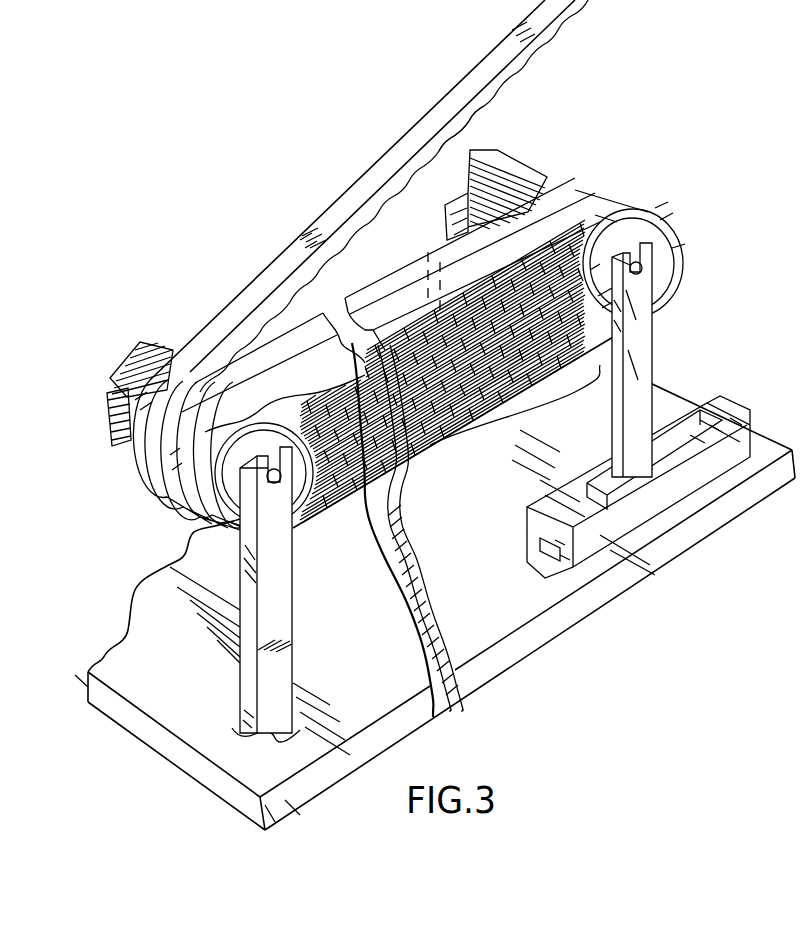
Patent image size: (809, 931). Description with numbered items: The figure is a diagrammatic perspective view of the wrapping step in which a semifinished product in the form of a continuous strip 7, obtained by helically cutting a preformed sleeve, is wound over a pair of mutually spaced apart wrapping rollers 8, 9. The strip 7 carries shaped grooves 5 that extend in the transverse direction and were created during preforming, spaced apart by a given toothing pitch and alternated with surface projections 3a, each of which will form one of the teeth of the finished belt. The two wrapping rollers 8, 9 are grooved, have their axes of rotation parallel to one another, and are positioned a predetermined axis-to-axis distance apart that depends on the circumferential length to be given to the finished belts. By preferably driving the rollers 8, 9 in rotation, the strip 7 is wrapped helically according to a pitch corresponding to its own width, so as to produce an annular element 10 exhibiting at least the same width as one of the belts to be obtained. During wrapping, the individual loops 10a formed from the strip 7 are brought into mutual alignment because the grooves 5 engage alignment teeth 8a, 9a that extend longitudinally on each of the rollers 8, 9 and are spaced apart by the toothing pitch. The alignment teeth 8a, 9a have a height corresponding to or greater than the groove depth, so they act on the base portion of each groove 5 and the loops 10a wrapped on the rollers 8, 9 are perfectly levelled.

The surface projections 3a is at (462, 135).
The shaped grooves 5 is at (535, 70).
The continuous strip 7 is at (420, 118).
The wrapping roller 8 is at (105, 440).
The alignment teeth 8a is at (117, 362).
The wrapping roller 9 is at (538, 175).
The alignment teeth 9a is at (468, 157).
The annular element 10 is at (625, 192).
The loops 10a is at (398, 302).